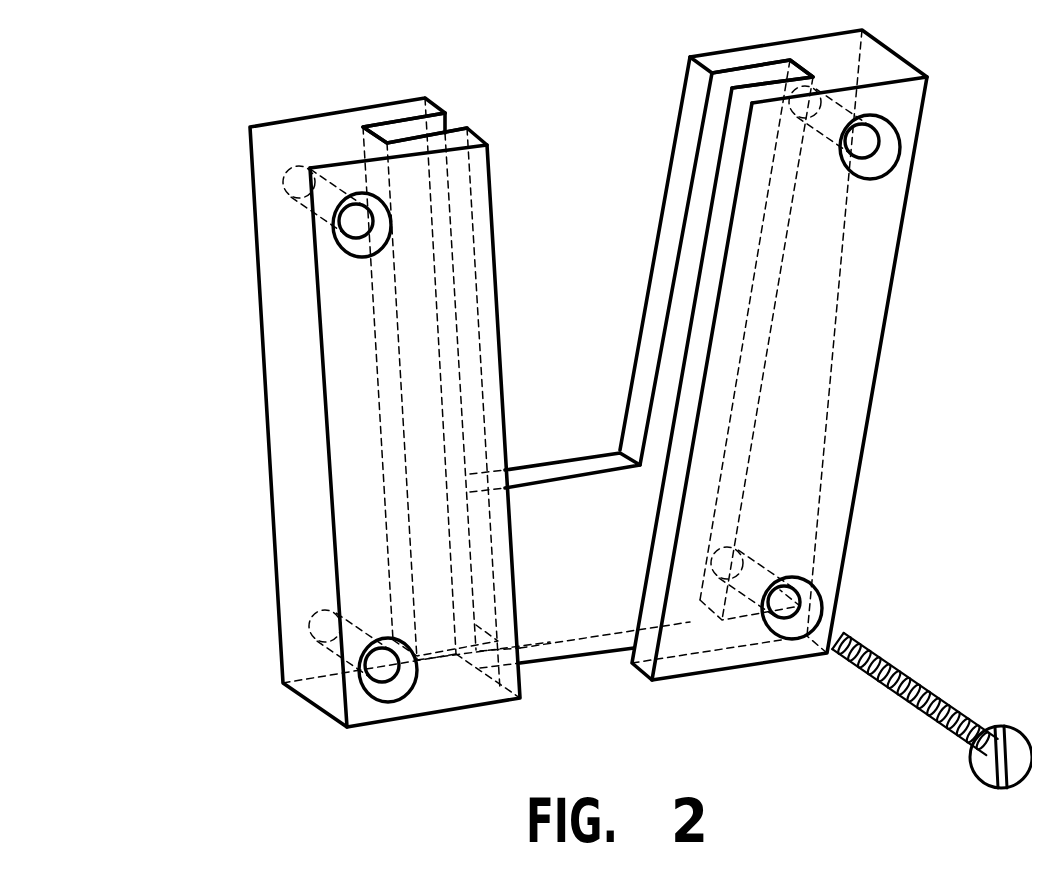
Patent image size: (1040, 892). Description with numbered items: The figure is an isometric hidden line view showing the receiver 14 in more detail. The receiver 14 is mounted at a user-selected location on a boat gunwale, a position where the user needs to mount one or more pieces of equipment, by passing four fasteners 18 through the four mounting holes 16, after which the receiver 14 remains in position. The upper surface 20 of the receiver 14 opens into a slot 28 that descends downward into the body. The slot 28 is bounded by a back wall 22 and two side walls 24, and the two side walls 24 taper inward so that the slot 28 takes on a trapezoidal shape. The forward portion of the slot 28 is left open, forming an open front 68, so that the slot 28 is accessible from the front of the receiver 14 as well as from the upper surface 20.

The receiver 14 is at (203, 621).
The mounting holes 16 is at (641, 394).
The fasteners 18 is at (932, 697).
The upper surface 20 is at (313, 140).
The back wall 22 is at (553, 594).
The side walls 24 is at (807, 349).
The slot 28 is at (423, 127).
The open front 68 is at (600, 253).